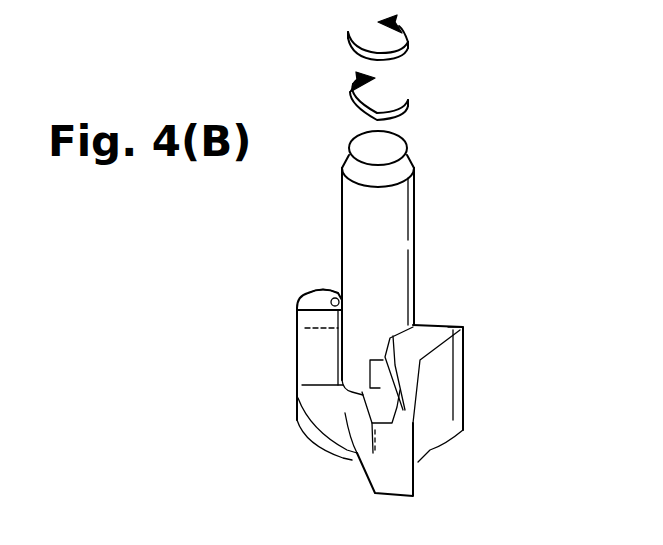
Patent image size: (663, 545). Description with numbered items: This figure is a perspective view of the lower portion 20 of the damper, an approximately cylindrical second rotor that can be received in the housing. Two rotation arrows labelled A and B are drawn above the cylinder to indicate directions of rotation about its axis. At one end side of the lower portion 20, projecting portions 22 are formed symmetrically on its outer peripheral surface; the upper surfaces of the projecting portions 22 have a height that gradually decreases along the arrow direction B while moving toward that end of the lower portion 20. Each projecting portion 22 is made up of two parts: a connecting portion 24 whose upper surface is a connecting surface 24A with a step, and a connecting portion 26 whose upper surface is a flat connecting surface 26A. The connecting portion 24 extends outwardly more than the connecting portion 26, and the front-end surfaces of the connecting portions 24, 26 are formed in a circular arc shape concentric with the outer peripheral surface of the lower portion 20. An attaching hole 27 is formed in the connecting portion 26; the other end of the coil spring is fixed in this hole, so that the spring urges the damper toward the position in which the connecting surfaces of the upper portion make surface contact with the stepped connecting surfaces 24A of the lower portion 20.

The lower portion 20 is at (430, 251).
The projecting portions 22 is at (210, 313).
The connecting portion 24 is at (297, 362).
The connecting portion 26 is at (300, 300).
The connecting surface 24A is at (308, 372).
The connecting surface 26A is at (334, 298).
The attaching hole 27 is at (325, 295).
The arrow direction A is at (408, 44).
The arrow direction B is at (408, 103).